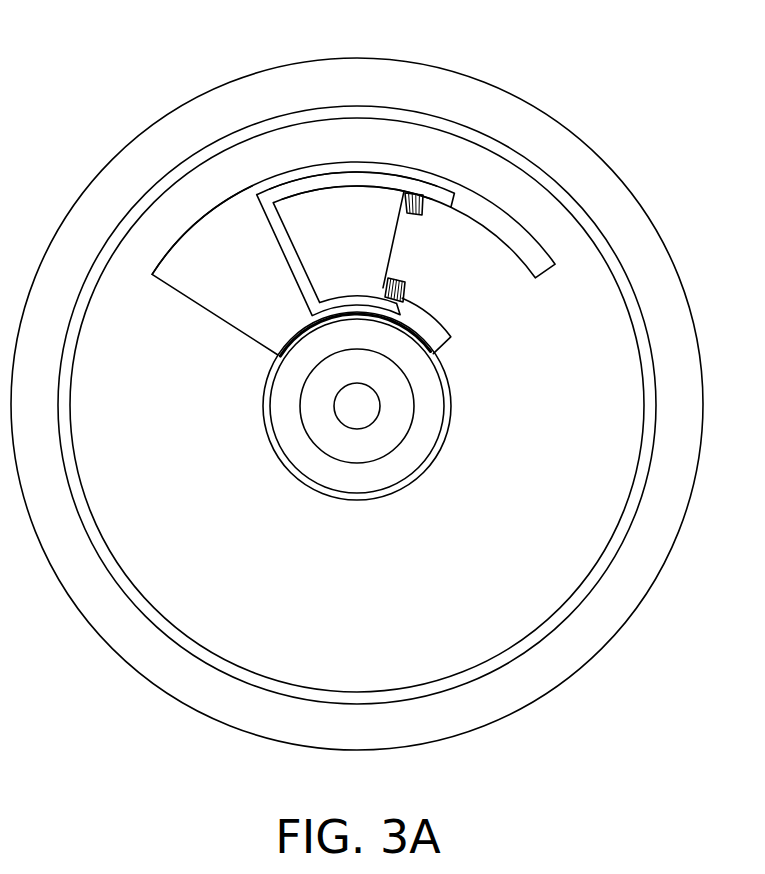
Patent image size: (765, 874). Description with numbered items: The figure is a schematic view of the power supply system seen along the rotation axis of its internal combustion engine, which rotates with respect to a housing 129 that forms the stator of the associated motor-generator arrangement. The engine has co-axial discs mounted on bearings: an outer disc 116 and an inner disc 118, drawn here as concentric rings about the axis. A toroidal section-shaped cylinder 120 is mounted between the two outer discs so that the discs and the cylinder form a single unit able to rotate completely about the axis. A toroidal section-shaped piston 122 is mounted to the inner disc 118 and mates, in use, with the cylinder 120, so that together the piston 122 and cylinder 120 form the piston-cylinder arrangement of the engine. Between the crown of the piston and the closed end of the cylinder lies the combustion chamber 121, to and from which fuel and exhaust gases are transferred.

The outer disc 116 is at (173, 260).
The inner disc 118 is at (358, 675).
The toroidal section-shaped cylinder 120 is at (280, 178).
The combustion chamber 121 is at (320, 203).
The toroidal section-shaped piston 122 is at (457, 248).
The housing 129 is at (225, 712).